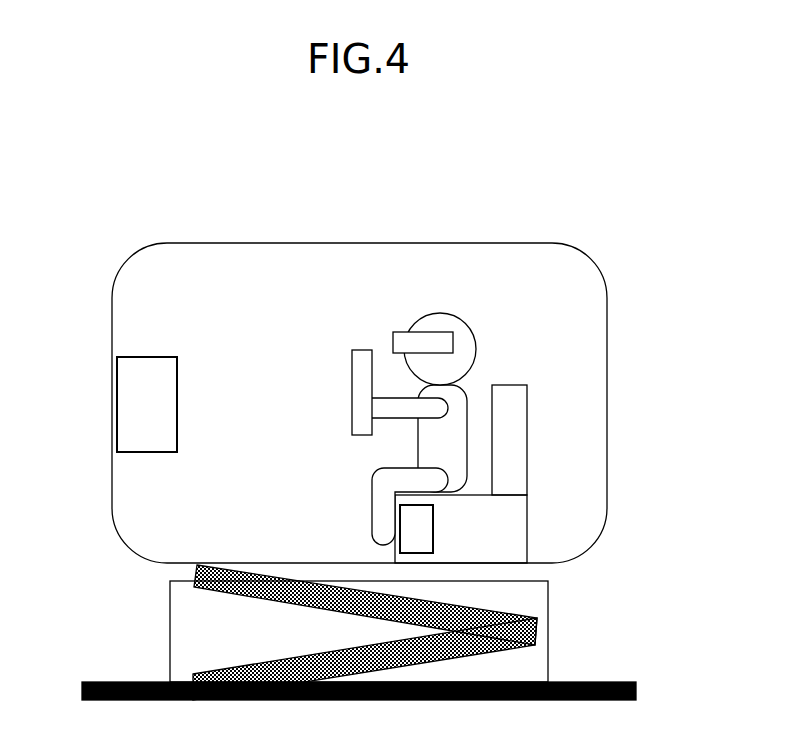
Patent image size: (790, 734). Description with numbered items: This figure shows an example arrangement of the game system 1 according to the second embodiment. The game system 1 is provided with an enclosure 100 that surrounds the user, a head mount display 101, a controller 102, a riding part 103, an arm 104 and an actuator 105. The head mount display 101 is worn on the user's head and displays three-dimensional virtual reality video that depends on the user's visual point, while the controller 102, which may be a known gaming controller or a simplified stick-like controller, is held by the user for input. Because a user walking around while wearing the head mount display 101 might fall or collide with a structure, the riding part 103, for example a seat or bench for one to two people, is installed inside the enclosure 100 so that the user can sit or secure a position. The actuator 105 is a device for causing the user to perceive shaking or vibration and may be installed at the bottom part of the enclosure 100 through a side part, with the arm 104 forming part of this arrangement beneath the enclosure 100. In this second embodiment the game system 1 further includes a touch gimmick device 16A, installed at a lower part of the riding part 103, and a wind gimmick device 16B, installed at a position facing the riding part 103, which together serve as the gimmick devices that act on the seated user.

The game system 1 is at (72, 146).
The enclosure 100 is at (501, 243).
The head mount display 101 is at (432, 338).
The controller 102 is at (362, 358).
The riding part 103 is at (477, 494).
The arm 104 is at (262, 663).
The actuator 105 is at (548, 641).
The touch gimmick device 16A is at (433, 527).
The wind gimmick device 16B is at (178, 402).